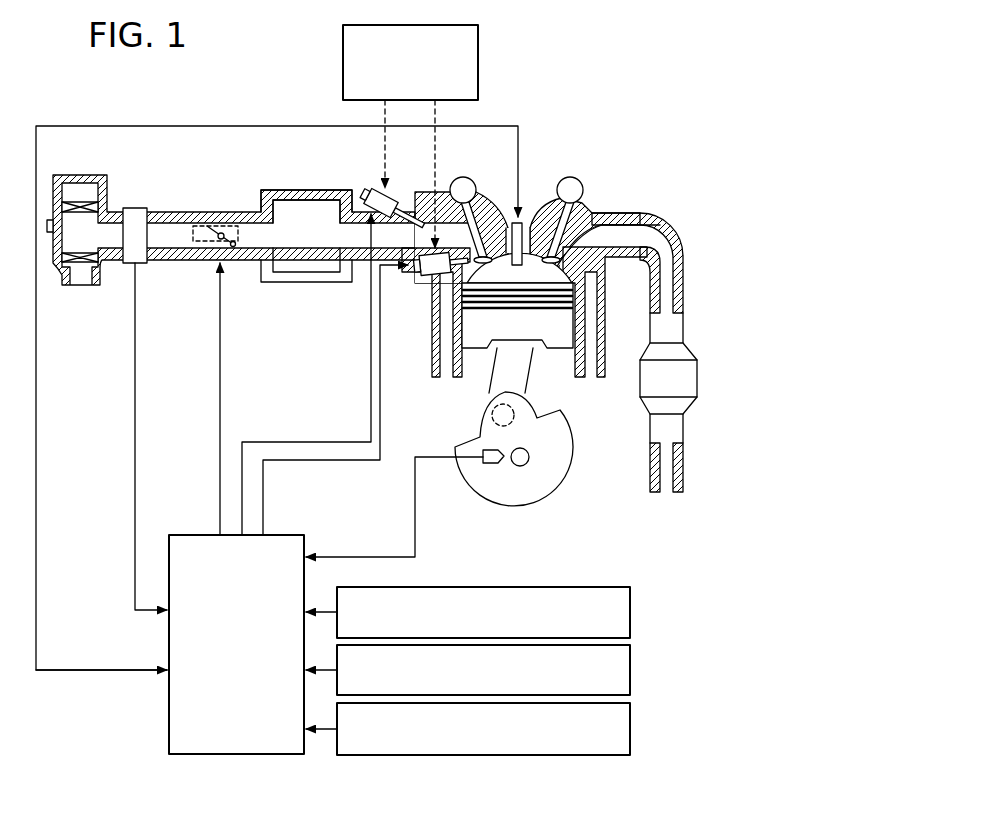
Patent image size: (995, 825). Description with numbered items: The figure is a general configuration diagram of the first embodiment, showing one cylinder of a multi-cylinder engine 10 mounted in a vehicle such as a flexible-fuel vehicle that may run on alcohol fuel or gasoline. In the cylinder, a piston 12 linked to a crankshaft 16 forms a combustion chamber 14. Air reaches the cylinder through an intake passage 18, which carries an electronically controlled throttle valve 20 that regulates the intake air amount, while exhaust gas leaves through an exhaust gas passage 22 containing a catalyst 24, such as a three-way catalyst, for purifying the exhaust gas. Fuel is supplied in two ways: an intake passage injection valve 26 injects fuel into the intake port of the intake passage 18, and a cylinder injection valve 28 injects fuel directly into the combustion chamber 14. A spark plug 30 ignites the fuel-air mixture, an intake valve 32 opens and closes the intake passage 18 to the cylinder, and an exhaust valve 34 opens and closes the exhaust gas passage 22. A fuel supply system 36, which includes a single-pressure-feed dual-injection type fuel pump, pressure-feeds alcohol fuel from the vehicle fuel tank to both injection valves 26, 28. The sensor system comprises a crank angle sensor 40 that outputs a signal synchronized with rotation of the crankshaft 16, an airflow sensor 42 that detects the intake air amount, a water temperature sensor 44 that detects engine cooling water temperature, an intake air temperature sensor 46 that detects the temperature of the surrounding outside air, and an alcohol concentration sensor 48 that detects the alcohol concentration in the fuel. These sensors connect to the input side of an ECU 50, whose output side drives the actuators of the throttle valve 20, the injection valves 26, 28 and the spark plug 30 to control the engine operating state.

The engine 10 is at (647, 197).
The piston 12 is at (472, 337).
The combustion chamber 14 is at (555, 273).
The crankshaft 16 is at (521, 467).
The intake passage 18 is at (287, 190).
The throttle valve 20 is at (218, 226).
The exhaust gas passage 22 is at (678, 242).
The catalyst 24 is at (642, 388).
The intake passage injection valve 26 is at (368, 192).
The cylinder injection valve 28 is at (422, 278).
The spark plug 30 is at (524, 216).
The intake valve 32 is at (474, 205).
The exhaust valve 34 is at (588, 213).
The fuel supply system 36 is at (480, 58).
The crank angle sensor 40 is at (492, 465).
The airflow sensor 42 is at (134, 208).
The water temperature sensor 44 is at (632, 613).
The intake air temperature sensor 46 is at (632, 672).
The alcohol concentration sensor 48 is at (632, 730).
The ECU 50 is at (240, 756).